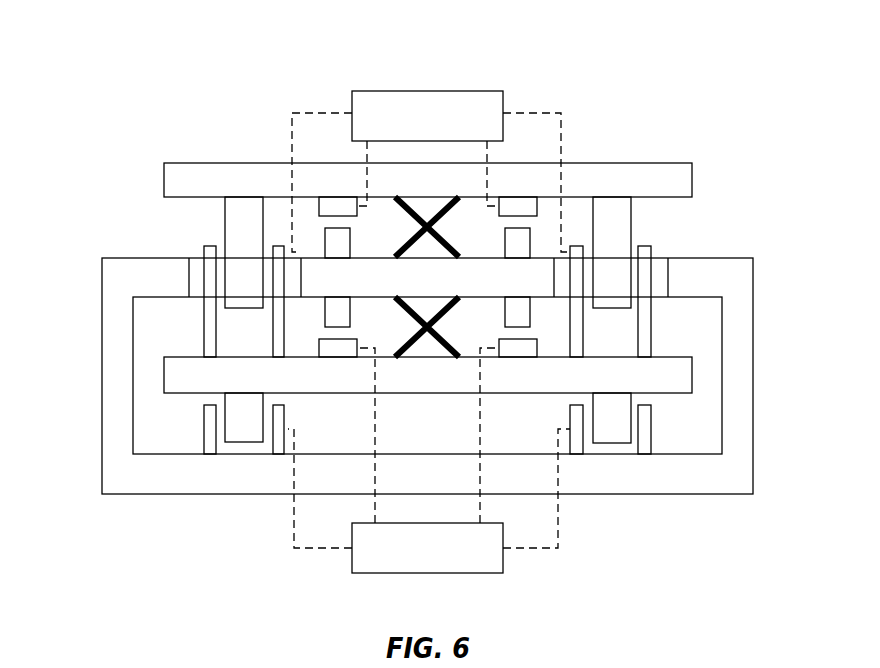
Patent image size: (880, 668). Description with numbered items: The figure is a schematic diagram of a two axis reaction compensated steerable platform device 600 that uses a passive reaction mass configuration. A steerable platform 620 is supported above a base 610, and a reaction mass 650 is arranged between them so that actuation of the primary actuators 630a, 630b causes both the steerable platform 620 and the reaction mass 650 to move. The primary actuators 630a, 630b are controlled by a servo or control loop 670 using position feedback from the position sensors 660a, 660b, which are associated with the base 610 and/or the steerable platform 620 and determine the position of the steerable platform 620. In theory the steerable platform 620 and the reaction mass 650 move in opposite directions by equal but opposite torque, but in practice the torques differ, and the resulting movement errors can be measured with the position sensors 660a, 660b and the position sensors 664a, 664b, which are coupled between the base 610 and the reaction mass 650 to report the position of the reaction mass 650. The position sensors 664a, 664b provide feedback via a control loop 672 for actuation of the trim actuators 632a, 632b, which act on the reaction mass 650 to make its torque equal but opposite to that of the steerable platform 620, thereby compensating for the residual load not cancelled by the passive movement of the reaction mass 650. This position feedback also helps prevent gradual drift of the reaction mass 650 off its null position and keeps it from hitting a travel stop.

The reaction compensated steerable platform device 600 is at (208, 57).
The base 610 is at (102, 333).
The steerable platform 620 is at (164, 182).
The primary actuator 630a is at (200, 228).
The primary actuator 630b is at (657, 230).
The trim actuator 632a is at (197, 423).
The trim actuator 632b is at (661, 423).
The reaction mass 650 is at (164, 377).
The position sensor 660a is at (311, 223).
The position sensor 660b is at (540, 223).
The position sensor 664a is at (308, 330).
The position sensor 664b is at (542, 332).
The servo or control loop 670 is at (468, 82).
The control loop 672 is at (373, 583).